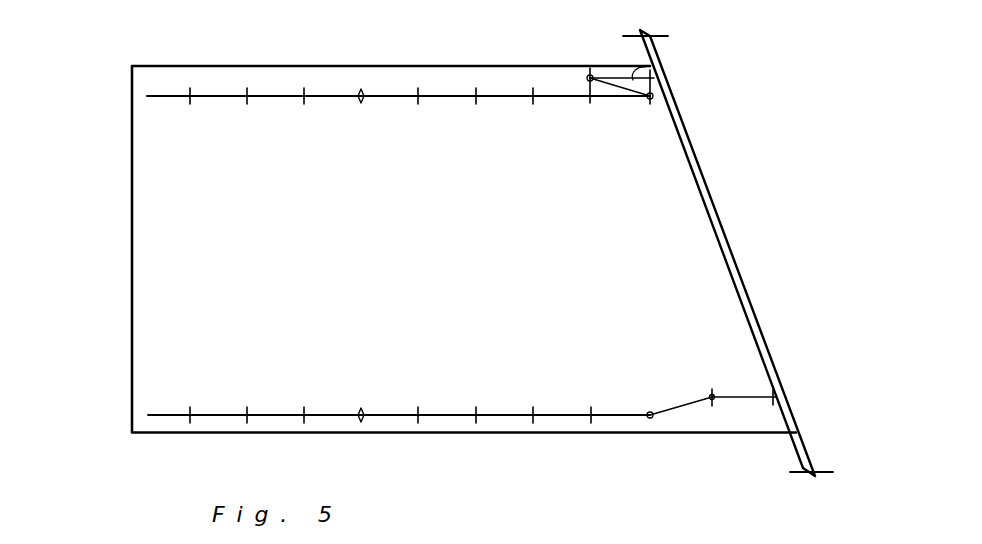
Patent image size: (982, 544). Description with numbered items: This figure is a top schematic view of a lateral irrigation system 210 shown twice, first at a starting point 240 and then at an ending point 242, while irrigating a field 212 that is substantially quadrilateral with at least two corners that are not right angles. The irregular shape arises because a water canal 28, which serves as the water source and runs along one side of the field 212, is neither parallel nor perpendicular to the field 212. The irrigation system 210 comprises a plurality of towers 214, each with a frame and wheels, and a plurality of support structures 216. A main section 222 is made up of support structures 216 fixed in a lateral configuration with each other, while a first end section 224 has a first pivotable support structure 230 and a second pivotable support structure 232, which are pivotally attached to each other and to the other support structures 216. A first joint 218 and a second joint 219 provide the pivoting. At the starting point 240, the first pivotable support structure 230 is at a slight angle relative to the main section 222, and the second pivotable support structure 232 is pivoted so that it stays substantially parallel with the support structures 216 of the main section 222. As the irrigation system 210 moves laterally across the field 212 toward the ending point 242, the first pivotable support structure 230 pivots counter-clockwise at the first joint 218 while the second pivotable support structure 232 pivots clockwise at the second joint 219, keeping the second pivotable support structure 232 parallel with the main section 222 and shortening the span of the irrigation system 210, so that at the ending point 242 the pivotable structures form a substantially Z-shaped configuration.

The water canal 28 is at (717, 217).
The irrigation system 210 is at (431, 120).
The field 212 is at (158, 240).
The towers 214 is at (247, 95).
The support structures 216 is at (265, 98).
The first joint 218 is at (653, 97).
The second joint 219 is at (589, 77).
The main section 222 is at (382, 95).
The first end section 224 is at (657, 57).
The first pivotable support structure 230 is at (612, 88).
The second pivotable support structure 232 is at (617, 68).
The starting point 240 is at (121, 414).
The ending point 242 is at (123, 95).